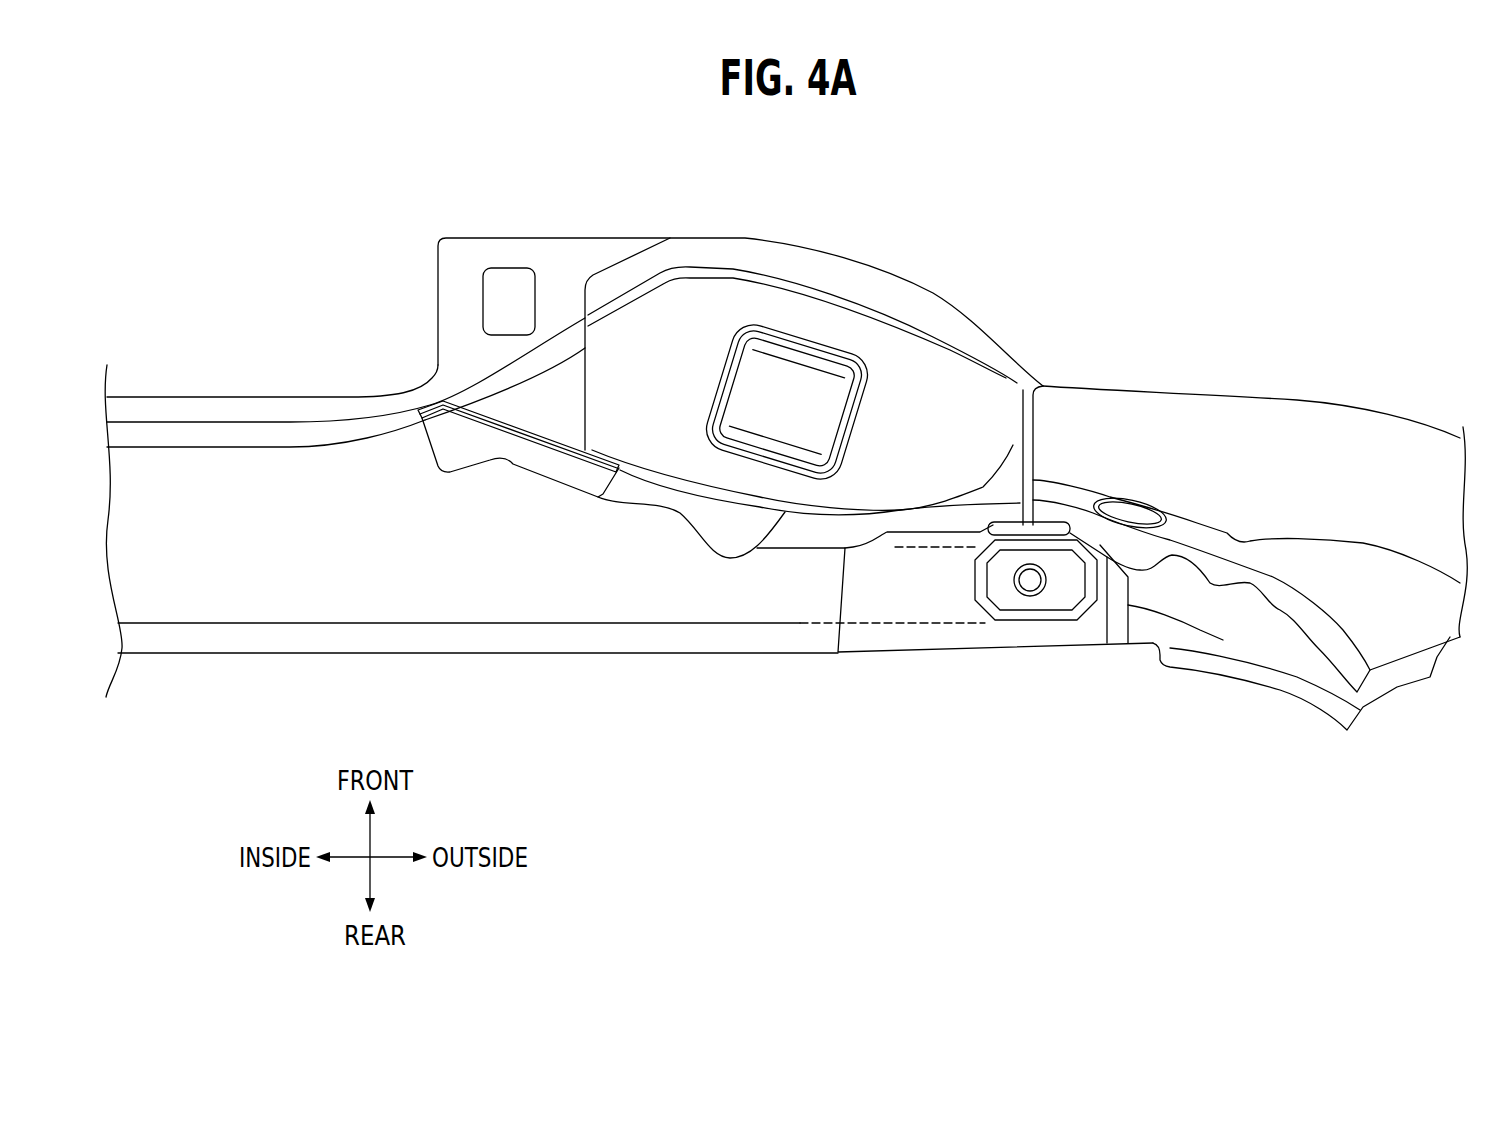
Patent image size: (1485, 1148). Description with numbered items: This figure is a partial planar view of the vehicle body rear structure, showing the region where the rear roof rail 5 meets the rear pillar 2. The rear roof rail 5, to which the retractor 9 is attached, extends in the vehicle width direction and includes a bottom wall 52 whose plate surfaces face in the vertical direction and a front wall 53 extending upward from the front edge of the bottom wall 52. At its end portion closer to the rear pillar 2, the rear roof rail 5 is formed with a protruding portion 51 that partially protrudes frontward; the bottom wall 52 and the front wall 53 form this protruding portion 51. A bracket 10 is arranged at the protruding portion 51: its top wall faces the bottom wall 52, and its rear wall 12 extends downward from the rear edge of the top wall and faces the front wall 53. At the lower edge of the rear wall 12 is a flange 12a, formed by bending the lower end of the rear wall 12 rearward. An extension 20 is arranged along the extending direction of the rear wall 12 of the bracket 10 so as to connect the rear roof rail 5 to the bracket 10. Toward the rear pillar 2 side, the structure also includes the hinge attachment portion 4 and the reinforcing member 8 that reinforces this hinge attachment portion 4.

The rear pillar 2 is at (1326, 397).
The hinge attachment portion 4 is at (1045, 603).
The rear roof rail 5 is at (211, 380).
The reinforcing member 8 is at (958, 638).
The retractor 9 is at (802, 397).
The bracket 10 is at (983, 400).
The rear wall 12 is at (772, 520).
The flange 12a is at (645, 497).
The extension 20 is at (508, 462).
The protruding portion 51 is at (818, 232).
The bottom wall 52 is at (546, 603).
The front wall 53 is at (330, 436).